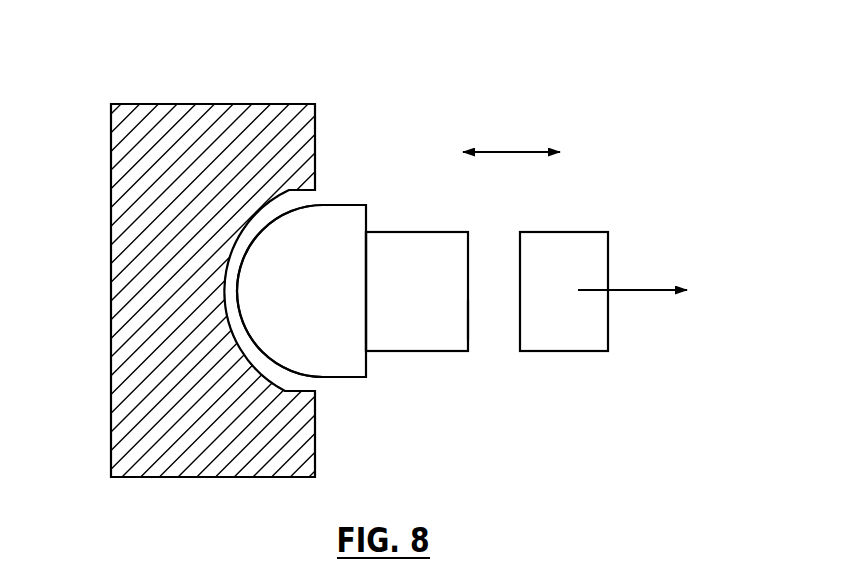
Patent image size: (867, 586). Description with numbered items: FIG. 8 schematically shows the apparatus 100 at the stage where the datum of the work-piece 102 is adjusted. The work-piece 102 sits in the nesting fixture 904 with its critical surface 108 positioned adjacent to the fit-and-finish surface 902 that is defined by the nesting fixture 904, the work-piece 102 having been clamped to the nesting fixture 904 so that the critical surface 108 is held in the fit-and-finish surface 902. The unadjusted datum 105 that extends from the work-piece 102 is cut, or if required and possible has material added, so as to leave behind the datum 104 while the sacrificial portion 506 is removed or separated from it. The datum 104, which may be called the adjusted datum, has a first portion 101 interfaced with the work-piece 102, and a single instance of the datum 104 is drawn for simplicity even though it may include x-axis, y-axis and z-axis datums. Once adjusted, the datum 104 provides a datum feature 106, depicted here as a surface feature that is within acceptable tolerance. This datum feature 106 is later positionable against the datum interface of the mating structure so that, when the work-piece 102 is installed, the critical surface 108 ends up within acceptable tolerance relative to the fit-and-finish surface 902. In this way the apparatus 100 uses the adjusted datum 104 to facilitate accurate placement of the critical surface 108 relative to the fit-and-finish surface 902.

The apparatus 100 is at (674, 106).
The first portion 101 is at (366, 293).
The work-piece 102 is at (331, 347).
The datum 104 is at (405, 232).
The unadjusted datum 105 is at (513, 151).
The datum feature 106 is at (469, 320).
The critical surface 108 is at (262, 345).
The sacrificial portion 506 is at (573, 232).
The fit-and-finish surface 902 is at (223, 290).
The nesting fixture 904 is at (168, 103).